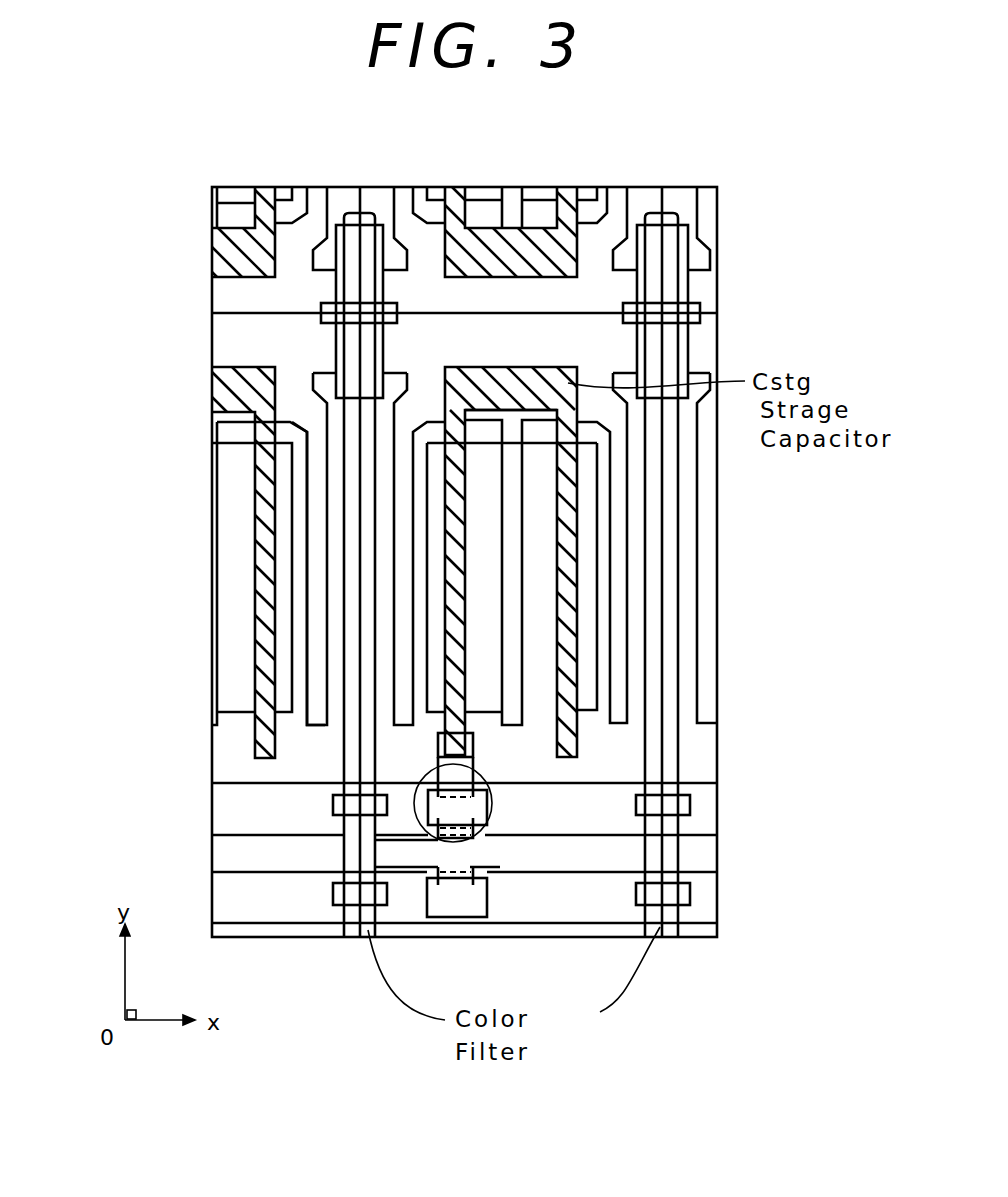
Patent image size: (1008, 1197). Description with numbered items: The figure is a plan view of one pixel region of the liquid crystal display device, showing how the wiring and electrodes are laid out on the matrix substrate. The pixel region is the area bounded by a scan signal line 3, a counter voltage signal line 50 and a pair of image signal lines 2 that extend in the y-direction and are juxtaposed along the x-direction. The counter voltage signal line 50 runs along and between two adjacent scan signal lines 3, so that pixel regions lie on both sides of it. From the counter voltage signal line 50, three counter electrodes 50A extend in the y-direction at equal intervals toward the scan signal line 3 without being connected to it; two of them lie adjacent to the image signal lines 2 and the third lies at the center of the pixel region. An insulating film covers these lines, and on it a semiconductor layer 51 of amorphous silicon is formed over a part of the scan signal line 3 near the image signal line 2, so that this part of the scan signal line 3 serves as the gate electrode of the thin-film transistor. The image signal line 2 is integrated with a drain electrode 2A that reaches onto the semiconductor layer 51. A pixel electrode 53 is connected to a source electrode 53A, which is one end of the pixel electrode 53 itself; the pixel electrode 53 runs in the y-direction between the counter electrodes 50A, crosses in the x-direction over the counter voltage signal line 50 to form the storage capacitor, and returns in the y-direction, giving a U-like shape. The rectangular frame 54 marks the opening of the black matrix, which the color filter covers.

The image signal line 2 is at (352, 642).
The drain electrode 2A is at (452, 887).
The scan signal line 3 is at (240, 818).
The counter voltage signal line 50 is at (432, 320).
The counter electrode 50A is at (403, 513).
The semiconductor layer 51 is at (488, 806).
The pixel electrode 53 is at (568, 497).
The source electrode 53A is at (475, 745).
The black matrix opening 54 is at (598, 653).